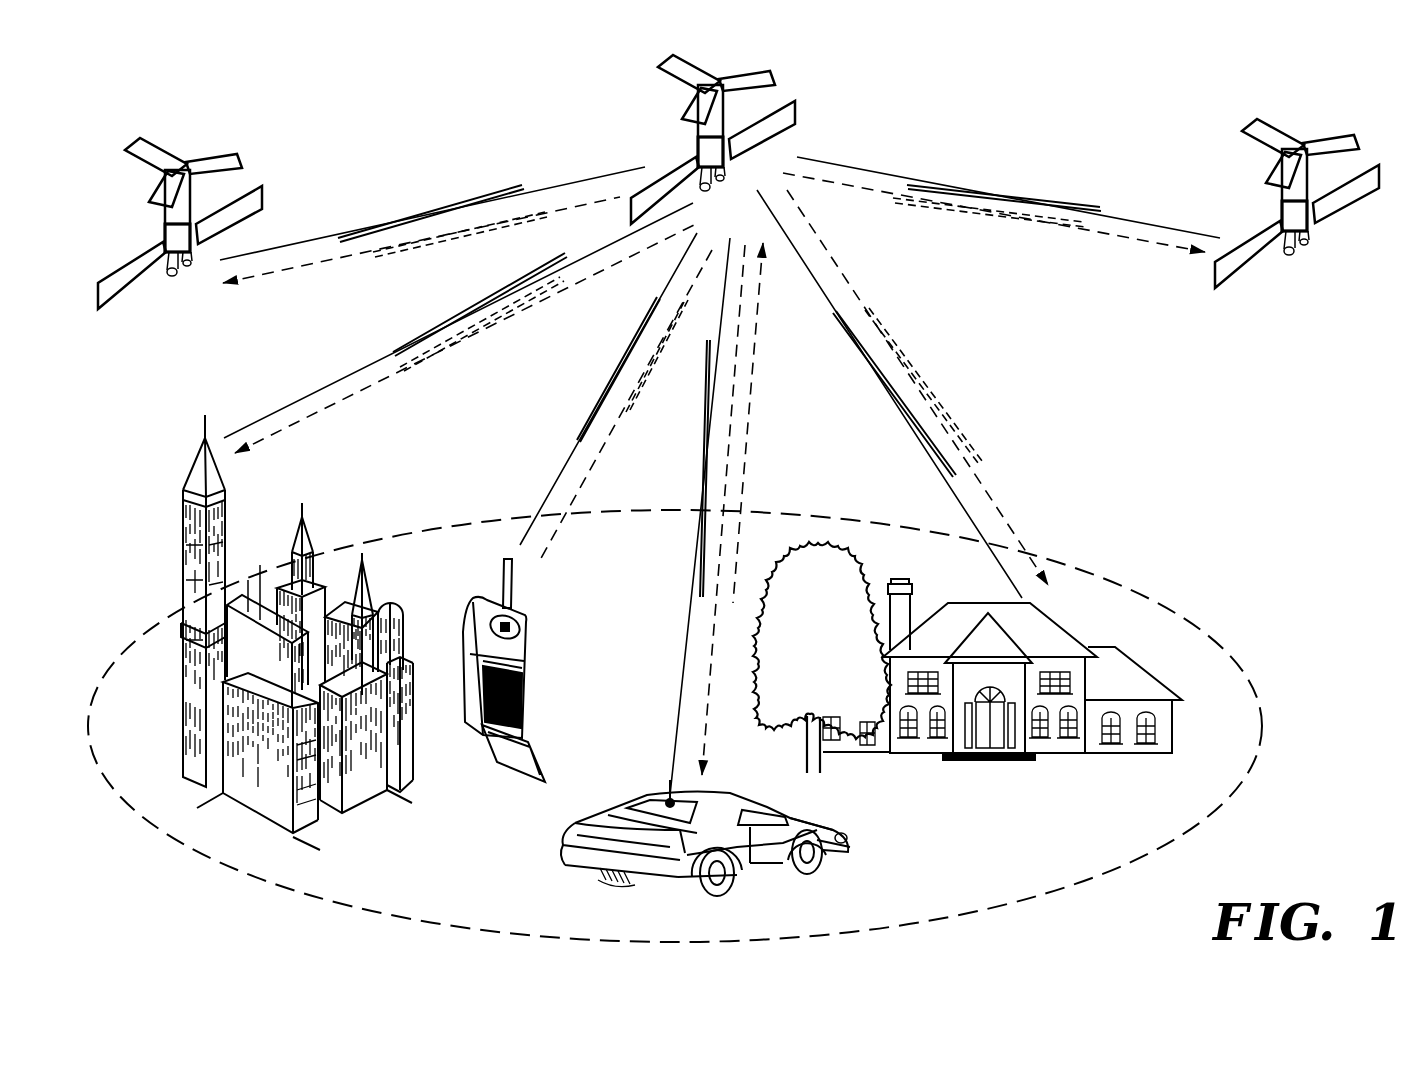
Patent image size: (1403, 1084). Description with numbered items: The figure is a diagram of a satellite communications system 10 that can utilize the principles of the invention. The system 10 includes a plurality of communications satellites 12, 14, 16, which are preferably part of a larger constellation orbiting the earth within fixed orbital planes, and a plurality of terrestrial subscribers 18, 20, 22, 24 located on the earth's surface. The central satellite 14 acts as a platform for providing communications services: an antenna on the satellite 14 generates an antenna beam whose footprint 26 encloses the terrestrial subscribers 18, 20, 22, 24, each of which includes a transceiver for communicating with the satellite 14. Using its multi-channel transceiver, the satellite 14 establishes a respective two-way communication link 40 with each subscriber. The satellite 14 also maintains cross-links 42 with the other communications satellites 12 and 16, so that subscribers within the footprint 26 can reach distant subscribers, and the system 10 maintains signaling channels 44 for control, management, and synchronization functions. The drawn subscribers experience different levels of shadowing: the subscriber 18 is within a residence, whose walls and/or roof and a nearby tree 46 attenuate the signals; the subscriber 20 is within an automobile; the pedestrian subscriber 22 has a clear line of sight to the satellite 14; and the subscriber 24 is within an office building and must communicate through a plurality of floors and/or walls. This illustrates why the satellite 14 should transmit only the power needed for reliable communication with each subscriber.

The satellite communications system 10 is at (1329, 870).
The communications satellite 12 is at (117, 293).
The communications satellite 14 is at (790, 118).
The communications satellite 16 is at (1242, 268).
The terrestrial subscriber within a residence 18 is at (1143, 683).
The terrestrial subscriber within an automobile 20 is at (832, 828).
The pedestrian subscriber 22 is at (522, 693).
The terrestrial subscriber within an office building 24 is at (185, 542).
The footprint 26 is at (1155, 597).
The two-way communication link 40 is at (388, 350).
The cross-link 42 is at (417, 215).
The signaling channel 44 is at (400, 252).
The tree 46 is at (772, 733).